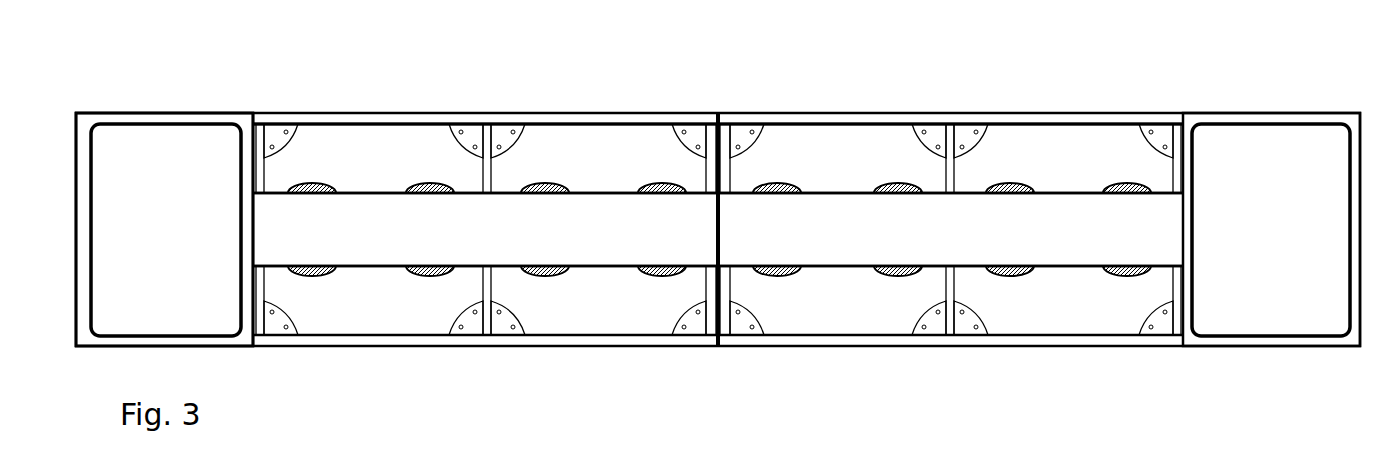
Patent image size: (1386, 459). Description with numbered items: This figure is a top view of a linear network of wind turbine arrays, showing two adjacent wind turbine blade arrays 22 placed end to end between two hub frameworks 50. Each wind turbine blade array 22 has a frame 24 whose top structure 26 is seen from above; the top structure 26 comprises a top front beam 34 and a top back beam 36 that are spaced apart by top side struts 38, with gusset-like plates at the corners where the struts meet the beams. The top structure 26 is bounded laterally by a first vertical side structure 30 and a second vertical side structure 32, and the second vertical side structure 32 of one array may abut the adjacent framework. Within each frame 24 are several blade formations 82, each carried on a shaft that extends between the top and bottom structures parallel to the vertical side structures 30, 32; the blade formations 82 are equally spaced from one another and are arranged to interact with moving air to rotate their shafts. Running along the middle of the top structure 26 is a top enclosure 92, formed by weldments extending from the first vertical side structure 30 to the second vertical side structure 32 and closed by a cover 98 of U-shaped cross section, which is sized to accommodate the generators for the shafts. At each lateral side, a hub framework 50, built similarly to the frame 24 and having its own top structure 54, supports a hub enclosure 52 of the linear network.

The wind turbine blade array 22 is at (423, 113).
The frame 24 is at (718, 83).
The top structure 26 is at (718, 83).
The top back beam 36 is at (718, 83).
The first vertical side structure 30 is at (265, 283).
The second vertical side structure 32 is at (706, 273).
The top front beam 34 is at (485, 346).
The top side struts 38 is at (720, 285).
The hub framework 50 is at (213, 113).
The hub enclosure 52 is at (165, 143).
The top structure of hub framework 54 is at (213, 113).
The blade formation 82 is at (545, 278).
The top enclosure 92 is at (577, 232).
The cover 98 is at (718, 148).